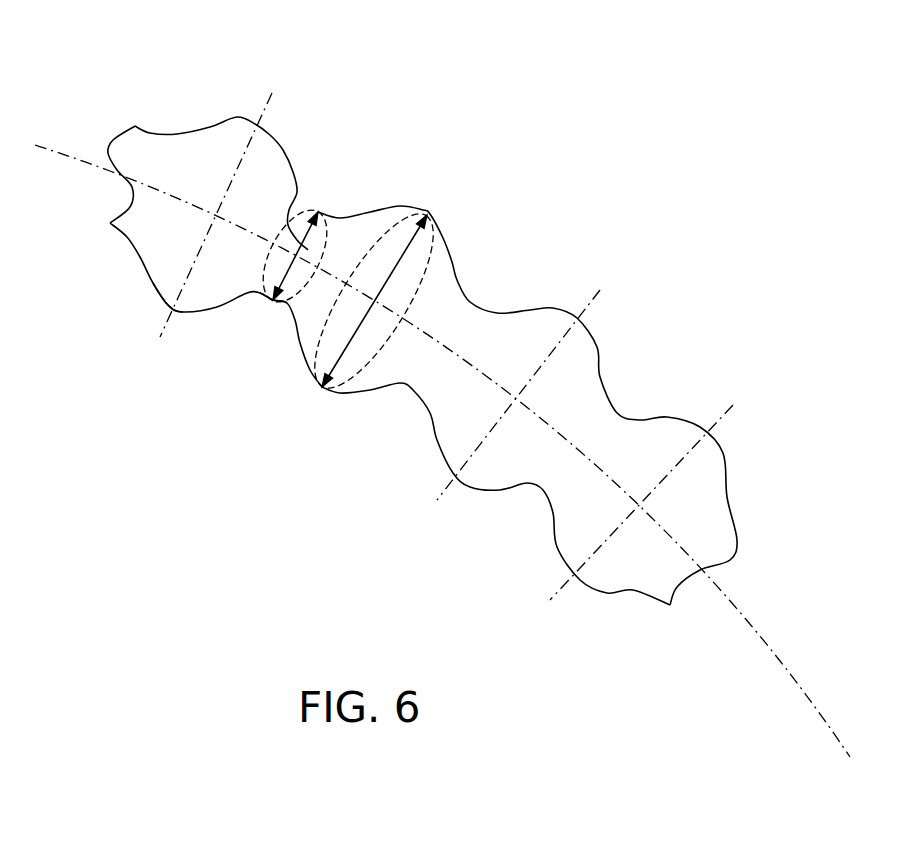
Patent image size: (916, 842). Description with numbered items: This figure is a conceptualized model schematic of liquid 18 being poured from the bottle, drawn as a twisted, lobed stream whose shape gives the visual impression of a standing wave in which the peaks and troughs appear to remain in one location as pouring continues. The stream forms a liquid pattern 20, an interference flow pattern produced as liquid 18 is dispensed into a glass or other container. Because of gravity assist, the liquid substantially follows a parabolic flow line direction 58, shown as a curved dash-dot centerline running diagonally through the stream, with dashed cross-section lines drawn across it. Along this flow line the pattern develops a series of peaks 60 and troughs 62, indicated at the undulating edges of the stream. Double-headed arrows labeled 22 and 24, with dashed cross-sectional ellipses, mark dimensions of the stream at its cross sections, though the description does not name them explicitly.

The liquid 18 is at (240, 117).
The liquid pattern 20 is at (468, 507).
The first cross-sectional dimension 22 is at (297, 192).
The second cross-sectional dimension 24 is at (453, 267).
The parabolic flow line direction 58 is at (793, 672).
The peaks 60 is at (167, 307).
The troughs 62 is at (270, 297).